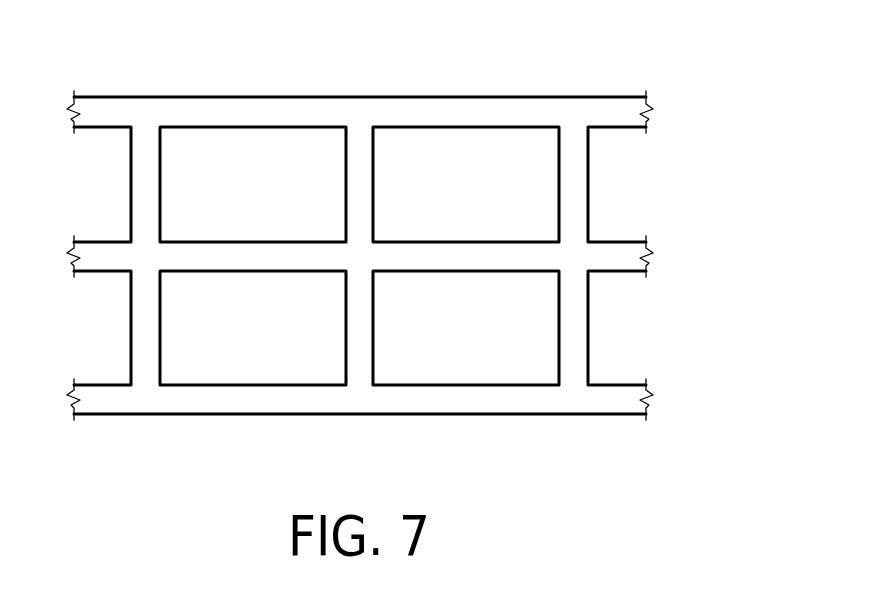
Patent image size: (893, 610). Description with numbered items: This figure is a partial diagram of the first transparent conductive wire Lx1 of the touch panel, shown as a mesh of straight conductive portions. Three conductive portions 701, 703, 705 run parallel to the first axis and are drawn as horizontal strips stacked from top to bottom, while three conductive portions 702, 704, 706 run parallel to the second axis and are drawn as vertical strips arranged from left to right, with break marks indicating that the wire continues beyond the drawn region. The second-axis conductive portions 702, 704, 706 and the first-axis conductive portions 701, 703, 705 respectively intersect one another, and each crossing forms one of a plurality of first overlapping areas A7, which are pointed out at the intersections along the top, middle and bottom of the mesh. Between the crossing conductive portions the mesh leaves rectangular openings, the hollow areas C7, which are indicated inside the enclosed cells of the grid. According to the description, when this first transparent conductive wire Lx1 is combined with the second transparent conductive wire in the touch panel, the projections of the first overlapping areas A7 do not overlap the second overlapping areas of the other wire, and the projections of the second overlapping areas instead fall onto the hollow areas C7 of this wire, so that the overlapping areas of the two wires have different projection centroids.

The conductive portion 701 is at (427, 111).
The conductive portion 702 is at (360, 186).
The conductive portion 703 is at (427, 260).
The conductive portion 704 is at (145, 186).
The conductive portion 705 is at (427, 398).
The conductive portion 706 is at (573, 185).
The first overlapping area A7 is at (139, 93).
The hollow area C7 is at (257, 136).
The first transparent conductive wire Lx1 is at (722, 254).